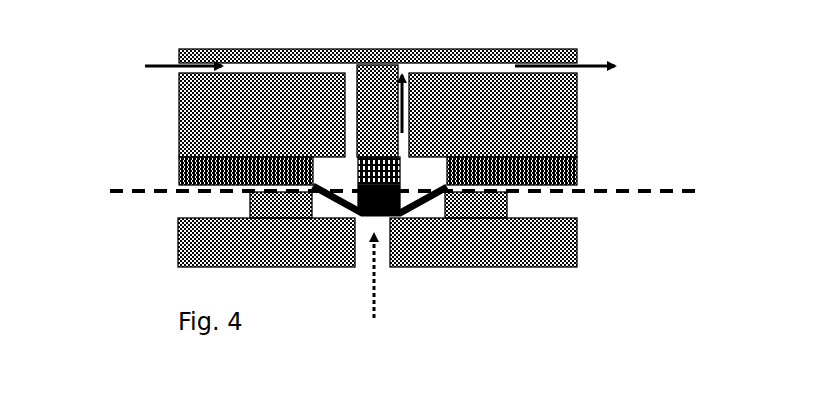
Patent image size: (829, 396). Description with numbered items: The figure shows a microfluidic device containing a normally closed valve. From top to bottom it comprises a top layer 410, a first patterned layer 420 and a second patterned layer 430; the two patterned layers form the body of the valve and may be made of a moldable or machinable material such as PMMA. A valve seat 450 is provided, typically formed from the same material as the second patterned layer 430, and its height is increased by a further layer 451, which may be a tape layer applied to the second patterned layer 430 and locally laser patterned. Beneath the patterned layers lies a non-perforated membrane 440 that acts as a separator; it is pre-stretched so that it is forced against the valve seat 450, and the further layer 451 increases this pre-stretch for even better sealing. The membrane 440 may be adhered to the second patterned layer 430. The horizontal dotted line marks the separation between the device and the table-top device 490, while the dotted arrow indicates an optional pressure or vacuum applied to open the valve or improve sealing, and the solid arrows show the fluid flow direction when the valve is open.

The top layer 410 is at (572, 51).
The first patterned layer 420 is at (577, 112).
The second patterned layer 430 is at (577, 166).
The membrane 440 is at (578, 191).
The valve seat 450 is at (348, 167).
The further layer 451 is at (400, 208).
The table-top device 490 is at (494, 253).